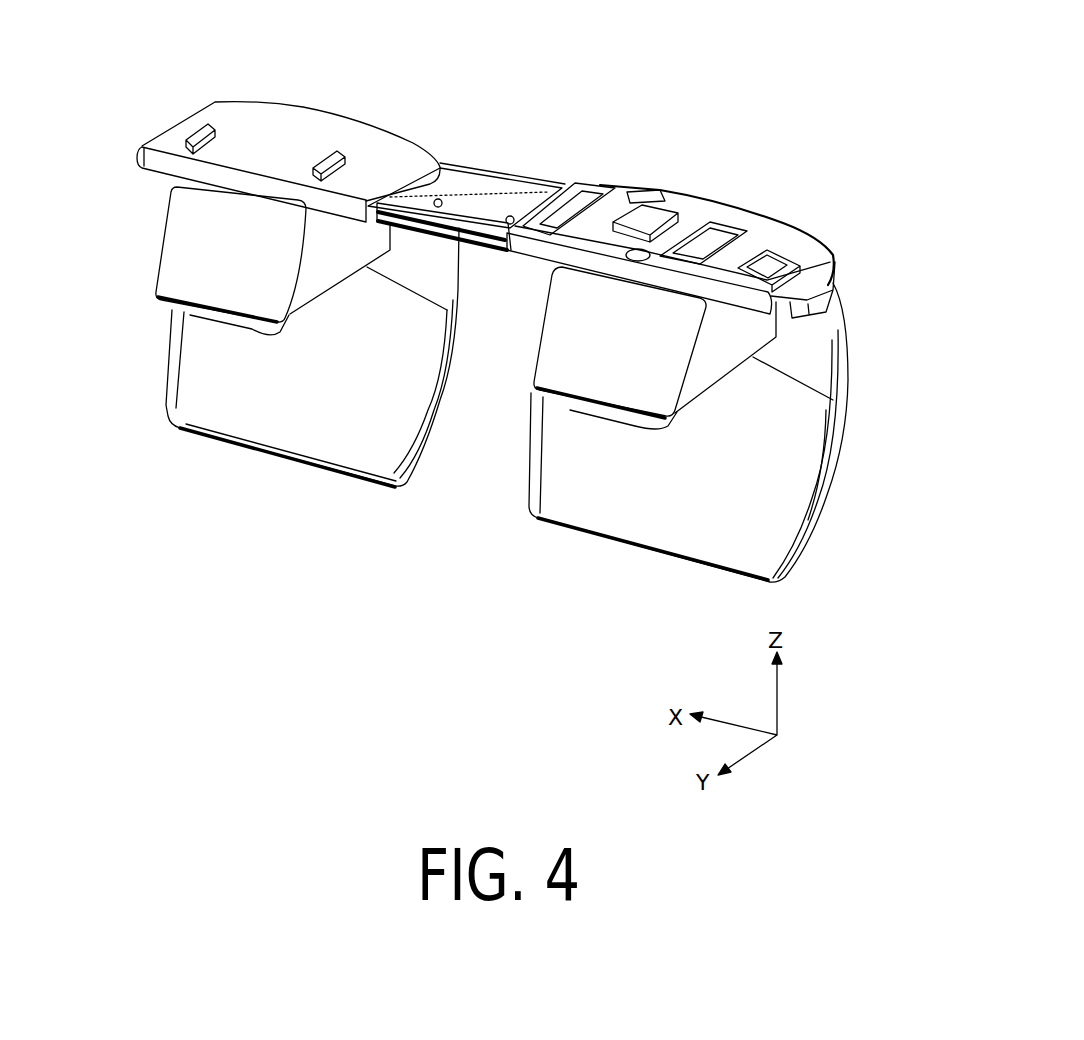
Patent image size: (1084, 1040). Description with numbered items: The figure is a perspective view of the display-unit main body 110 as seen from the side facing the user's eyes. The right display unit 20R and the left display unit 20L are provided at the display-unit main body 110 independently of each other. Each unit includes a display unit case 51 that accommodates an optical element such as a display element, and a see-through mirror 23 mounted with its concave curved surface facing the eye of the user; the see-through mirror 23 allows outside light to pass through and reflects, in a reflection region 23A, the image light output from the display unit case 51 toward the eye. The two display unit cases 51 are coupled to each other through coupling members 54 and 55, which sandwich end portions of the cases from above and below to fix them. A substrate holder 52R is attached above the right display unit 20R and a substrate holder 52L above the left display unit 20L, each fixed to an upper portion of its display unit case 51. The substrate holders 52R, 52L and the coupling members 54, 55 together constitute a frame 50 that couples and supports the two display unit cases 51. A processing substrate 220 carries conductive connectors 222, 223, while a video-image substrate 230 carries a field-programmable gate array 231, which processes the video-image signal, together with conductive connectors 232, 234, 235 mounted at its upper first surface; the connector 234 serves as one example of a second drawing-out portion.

The display-unit main body 110 is at (803, 82).
The left display unit 20L is at (136, 193).
The right display unit 20R is at (858, 283).
The frame 50 is at (550, 99).
The display unit case 51 is at (172, 262).
The substrate holder 52L is at (142, 155).
The substrate holder 52R is at (746, 297).
The coupling member 54 is at (484, 180).
The coupling member 55 is at (490, 250).
The see-through mirror 23 is at (260, 462).
The reflection region 23A is at (200, 437).
The processing substrate 220 is at (322, 135).
The conductive connector 222 is at (210, 124).
The conductive connector 223 is at (340, 153).
The video-image substrate 230 is at (690, 198).
The field-programmable gate array 231 is at (650, 210).
The conductive connector 232 is at (735, 224).
The conductive connector 234 is at (587, 188).
The conductive connector 235 is at (775, 252).